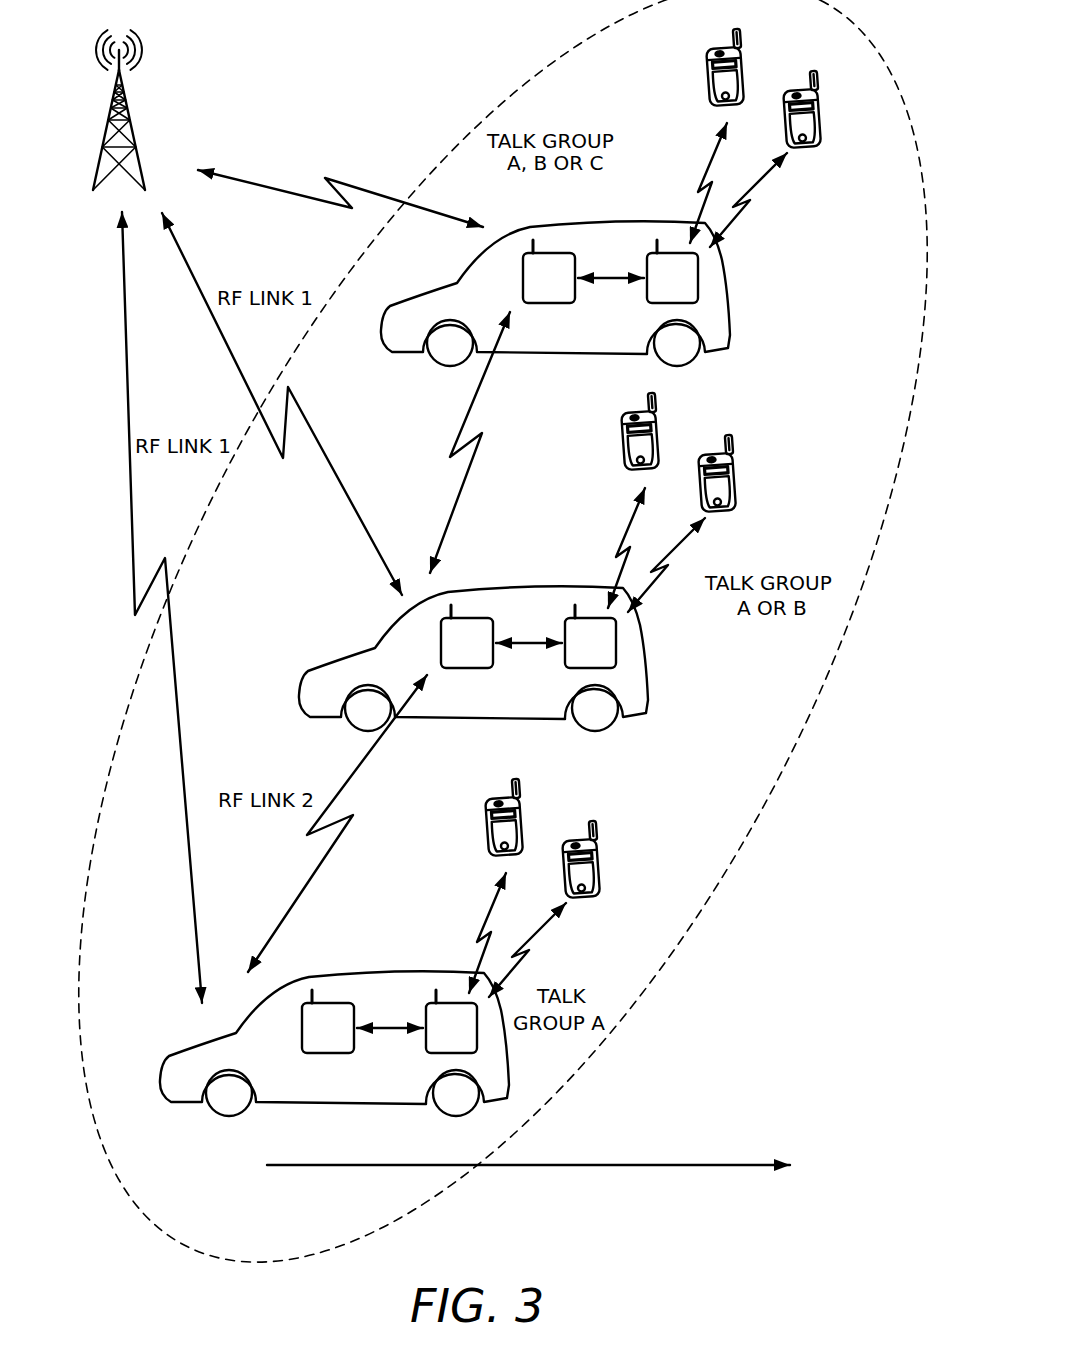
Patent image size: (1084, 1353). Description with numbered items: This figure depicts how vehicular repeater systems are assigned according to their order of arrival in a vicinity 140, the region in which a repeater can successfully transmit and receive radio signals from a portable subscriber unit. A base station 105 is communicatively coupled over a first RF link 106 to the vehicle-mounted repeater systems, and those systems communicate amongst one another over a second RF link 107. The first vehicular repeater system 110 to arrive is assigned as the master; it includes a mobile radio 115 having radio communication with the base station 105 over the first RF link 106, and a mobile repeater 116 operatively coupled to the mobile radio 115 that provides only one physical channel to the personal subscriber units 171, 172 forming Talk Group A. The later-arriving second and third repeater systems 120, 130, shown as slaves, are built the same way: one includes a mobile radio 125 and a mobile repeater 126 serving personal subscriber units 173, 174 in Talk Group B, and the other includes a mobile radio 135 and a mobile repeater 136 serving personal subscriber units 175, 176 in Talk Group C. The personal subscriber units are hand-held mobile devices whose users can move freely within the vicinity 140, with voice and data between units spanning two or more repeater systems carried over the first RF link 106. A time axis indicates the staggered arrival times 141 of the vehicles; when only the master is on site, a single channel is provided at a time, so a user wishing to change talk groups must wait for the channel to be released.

The base station 105 is at (132, 128).
The first RF link 106 is at (275, 190).
The second RF link 107 is at (455, 505).
The first vehicular repeater system 110 is at (334, 1045).
The mobile radio 115 is at (354, 1036).
The mobile repeater 116 is at (434, 1016).
The slave vehicle 120 is at (473, 659).
The mobile radio 125 is at (493, 651).
The mobile repeater 126 is at (573, 631).
The slave vehicle 130 is at (587, 223).
The mobile radio 135 is at (560, 304).
The mobile repeater 136 is at (646, 268).
The vicinity 140 is at (736, 859).
The arrival time 141 is at (634, 1163).
The personal subscriber unit 171 is at (475, 817).
The personal subscriber unit 172 is at (568, 855).
The personal subscriber unit 173 is at (611, 431).
The personal subscriber unit 174 is at (704, 469).
The personal subscriber unit 175 is at (707, 82).
The personal subscriber unit 176 is at (812, 87).